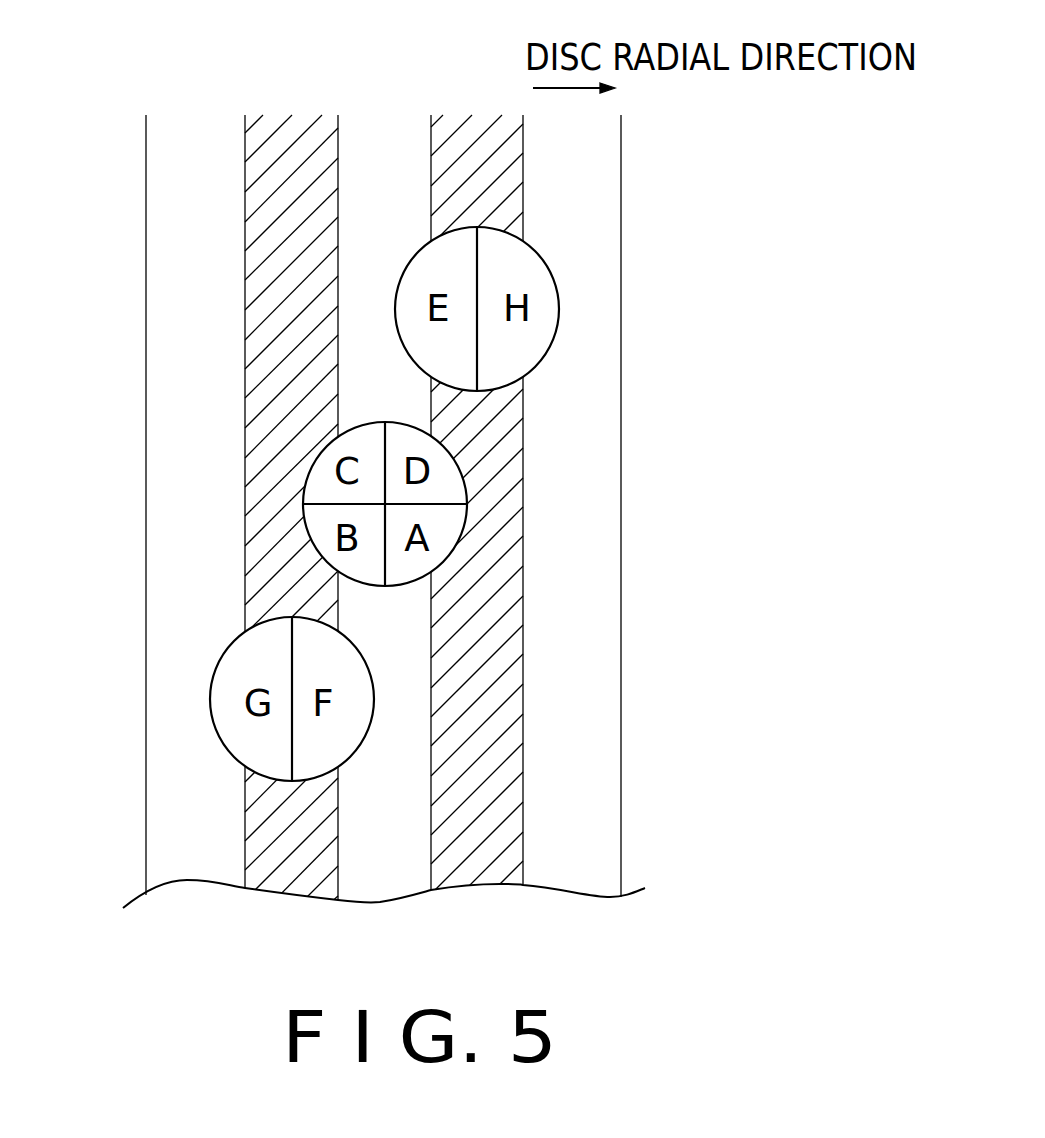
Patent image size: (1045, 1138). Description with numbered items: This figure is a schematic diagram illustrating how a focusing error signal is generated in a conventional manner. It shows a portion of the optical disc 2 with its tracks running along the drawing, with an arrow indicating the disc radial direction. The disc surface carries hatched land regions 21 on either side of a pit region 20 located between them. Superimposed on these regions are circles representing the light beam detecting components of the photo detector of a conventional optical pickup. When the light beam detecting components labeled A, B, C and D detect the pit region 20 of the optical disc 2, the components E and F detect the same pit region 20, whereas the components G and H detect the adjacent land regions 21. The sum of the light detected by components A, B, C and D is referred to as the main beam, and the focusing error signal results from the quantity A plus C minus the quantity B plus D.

The optical disc 2 is at (130, 420).
The pit region 20 is at (383, 135).
The land region 21 is at (297, 122).